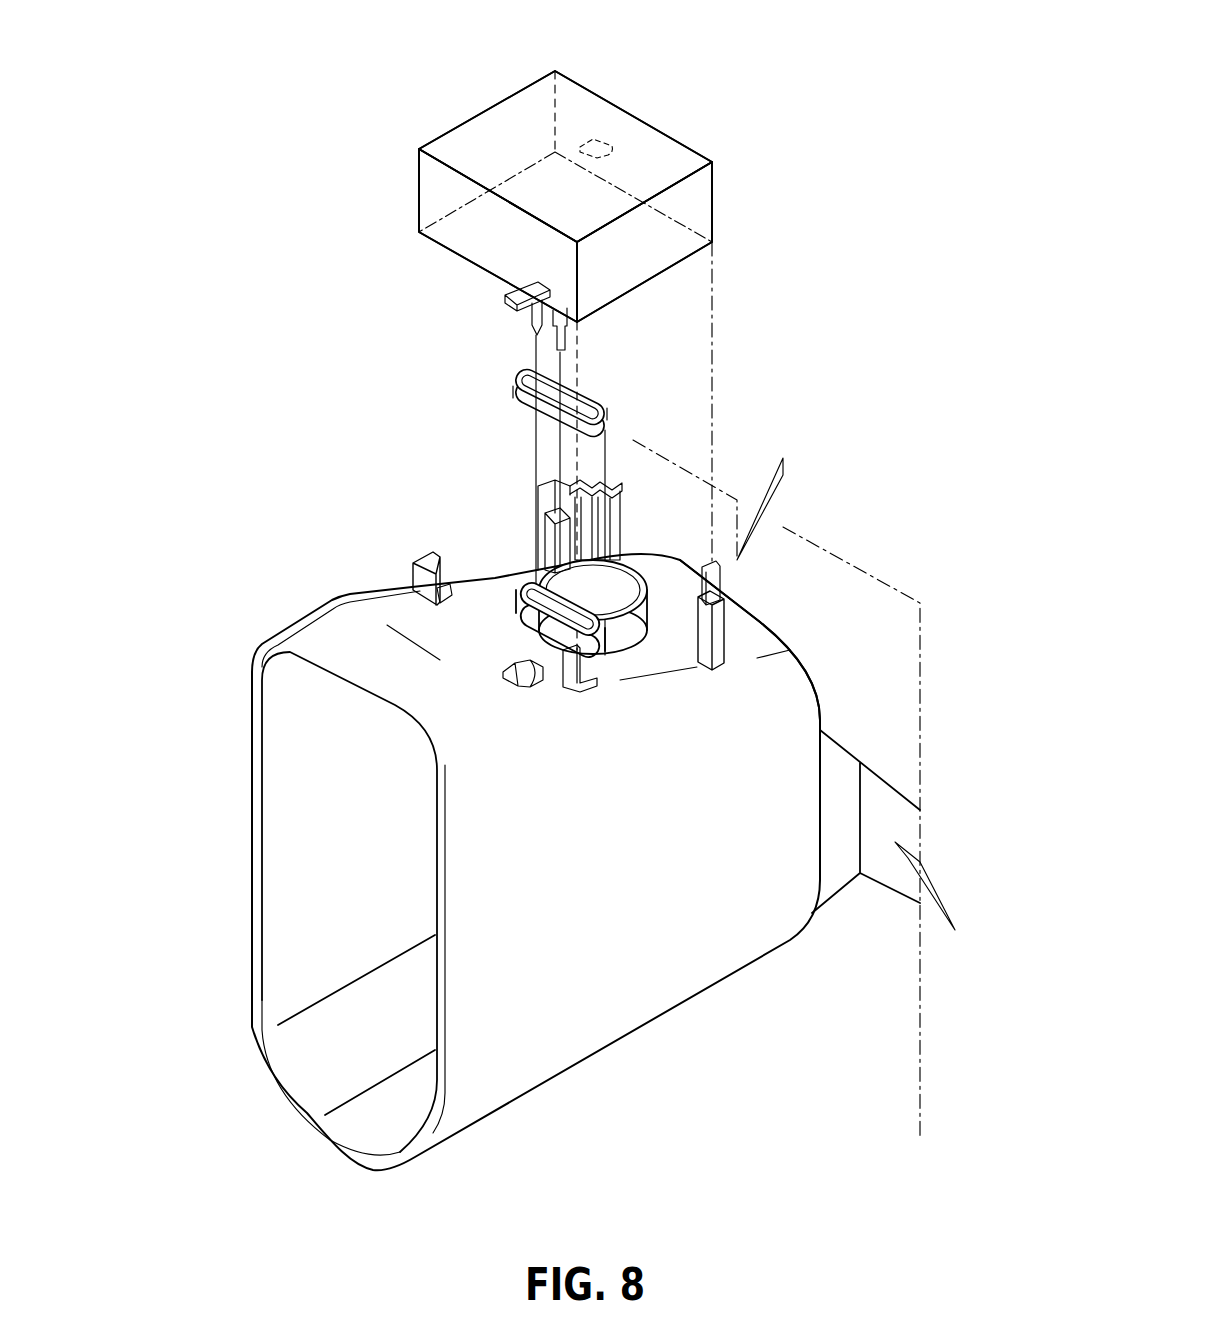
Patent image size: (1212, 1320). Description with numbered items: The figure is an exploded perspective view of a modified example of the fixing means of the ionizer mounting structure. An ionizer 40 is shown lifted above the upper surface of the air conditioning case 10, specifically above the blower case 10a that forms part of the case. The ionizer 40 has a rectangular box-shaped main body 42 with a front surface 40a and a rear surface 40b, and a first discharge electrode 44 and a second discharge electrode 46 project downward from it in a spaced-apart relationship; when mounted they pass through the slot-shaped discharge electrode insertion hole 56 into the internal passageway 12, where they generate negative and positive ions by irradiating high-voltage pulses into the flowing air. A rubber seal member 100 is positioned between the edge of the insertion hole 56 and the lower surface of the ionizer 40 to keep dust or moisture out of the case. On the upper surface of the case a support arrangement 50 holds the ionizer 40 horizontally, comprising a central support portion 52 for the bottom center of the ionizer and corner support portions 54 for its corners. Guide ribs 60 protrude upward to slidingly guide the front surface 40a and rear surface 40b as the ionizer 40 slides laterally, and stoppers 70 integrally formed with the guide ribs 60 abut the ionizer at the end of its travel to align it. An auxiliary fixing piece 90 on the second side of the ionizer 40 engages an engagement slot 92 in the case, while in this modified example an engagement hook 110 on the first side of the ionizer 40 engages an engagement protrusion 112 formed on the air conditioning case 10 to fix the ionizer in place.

The air conditioning case 10 is at (658, 1073).
The blower case 10a is at (767, 626).
The internal passageway 12 is at (343, 923).
The ionizer 40 is at (572, 168).
The front surface 40a is at (435, 183).
The rear surface 40b is at (713, 203).
The main body 42 is at (573, 97).
The first discharge electrode 44 is at (530, 323).
The second discharge electrode 46 is at (573, 328).
The support arrangement 50 is at (599, 670).
The central support portion 52 is at (647, 607).
The corner support portion 54 is at (740, 755).
The discharge electrode insertion hole 56 is at (483, 593).
The guide rib 60 is at (422, 583).
The stopper 70 is at (425, 565).
The auxiliary fixing piece 90 is at (605, 140).
The engagement slot 92 is at (607, 503).
The seal member 100 is at (600, 403).
The engagement hook 110 is at (507, 295).
The engagement protrusion 112 is at (505, 665).